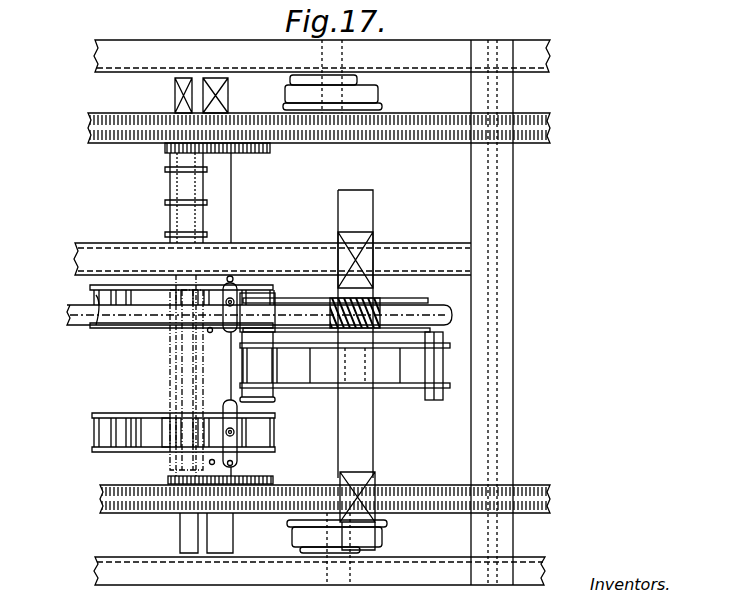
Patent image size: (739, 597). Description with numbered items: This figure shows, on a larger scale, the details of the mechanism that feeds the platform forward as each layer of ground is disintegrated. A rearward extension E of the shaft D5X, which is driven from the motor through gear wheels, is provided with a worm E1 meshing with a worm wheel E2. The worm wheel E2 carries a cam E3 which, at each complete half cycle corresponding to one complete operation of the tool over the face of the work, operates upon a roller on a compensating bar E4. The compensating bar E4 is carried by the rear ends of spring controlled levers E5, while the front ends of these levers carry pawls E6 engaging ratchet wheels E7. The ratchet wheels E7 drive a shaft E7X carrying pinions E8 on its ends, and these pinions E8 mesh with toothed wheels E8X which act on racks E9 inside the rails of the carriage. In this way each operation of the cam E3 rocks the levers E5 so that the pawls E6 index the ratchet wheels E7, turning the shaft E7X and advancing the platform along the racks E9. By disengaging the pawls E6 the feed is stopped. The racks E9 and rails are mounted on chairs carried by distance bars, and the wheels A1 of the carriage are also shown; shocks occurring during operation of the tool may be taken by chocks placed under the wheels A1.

The rack E9 is at (381, 136).
The pinion E8 is at (166, 147).
The toothed wheel E8X is at (244, 153).
The wheel A1 is at (384, 104).
The ratchet wheel E7 is at (151, 297).
The spring controlled lever E5 is at (166, 310).
The pawl E6 is at (126, 297).
The shaft D5X is at (100, 302).
The shaft E7X is at (178, 378).
The rearward extension E is at (416, 318).
The worm wheel E2 is at (411, 316).
The worm E1 is at (334, 307).
The cam E3 is at (378, 365).
The compensating bar E4 is at (270, 396).